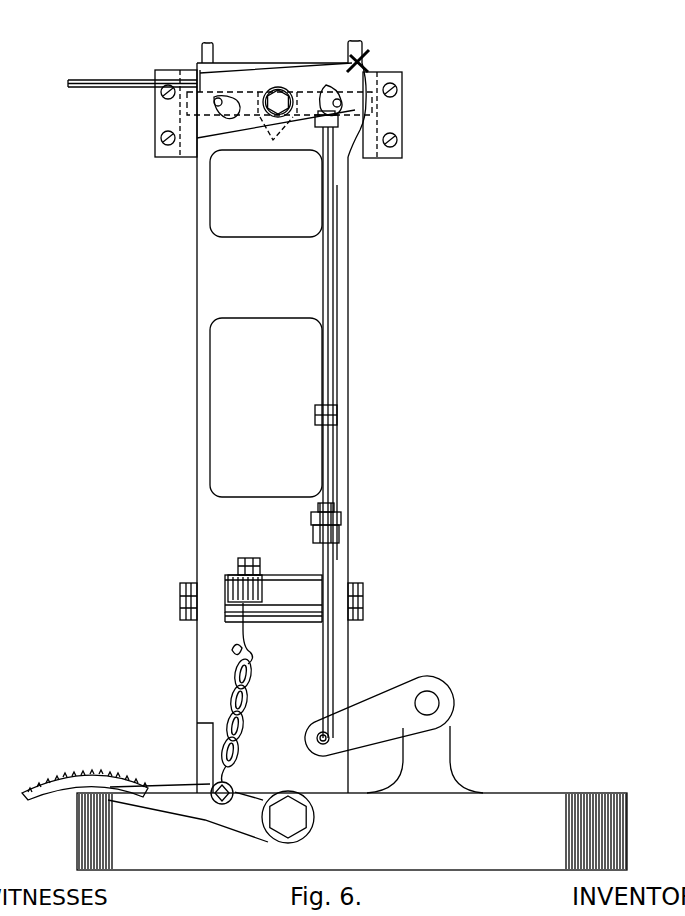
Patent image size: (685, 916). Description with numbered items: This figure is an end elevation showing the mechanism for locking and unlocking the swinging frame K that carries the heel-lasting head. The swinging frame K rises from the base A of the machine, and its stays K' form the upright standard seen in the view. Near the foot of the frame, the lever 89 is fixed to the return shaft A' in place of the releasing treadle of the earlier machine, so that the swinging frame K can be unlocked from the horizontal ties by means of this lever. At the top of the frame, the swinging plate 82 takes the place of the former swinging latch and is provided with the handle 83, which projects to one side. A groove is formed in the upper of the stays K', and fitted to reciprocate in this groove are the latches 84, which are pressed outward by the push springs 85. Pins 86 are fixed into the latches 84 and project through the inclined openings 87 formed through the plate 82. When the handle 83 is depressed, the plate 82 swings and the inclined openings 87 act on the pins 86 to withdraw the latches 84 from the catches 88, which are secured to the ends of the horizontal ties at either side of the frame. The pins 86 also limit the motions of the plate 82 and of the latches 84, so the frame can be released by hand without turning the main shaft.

The swinging plate 82 is at (362, 60).
The handle 83 is at (132, 75).
The latches 84 is at (327, 127).
The push springs 85 is at (302, 112).
The pins 86 is at (223, 93).
The inclined openings 87 is at (233, 98).
The catches 88 is at (160, 114).
The lever 89 is at (379, 716).
The swinging frame K is at (261, 428).
The stays K' is at (314, 165).
The base A is at (324, 820).
The return shaft A' is at (433, 739).